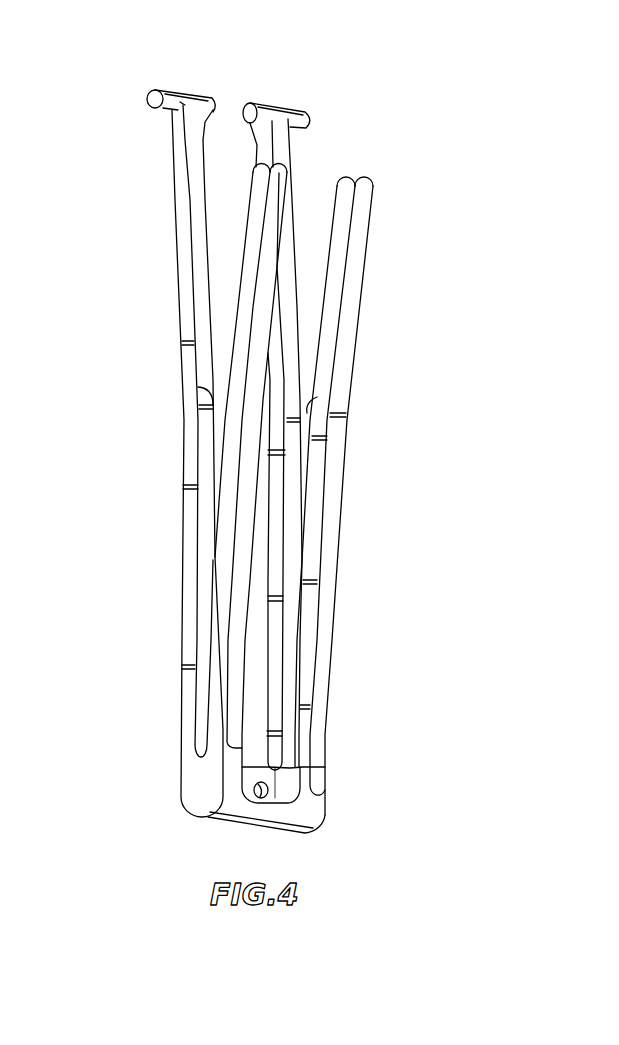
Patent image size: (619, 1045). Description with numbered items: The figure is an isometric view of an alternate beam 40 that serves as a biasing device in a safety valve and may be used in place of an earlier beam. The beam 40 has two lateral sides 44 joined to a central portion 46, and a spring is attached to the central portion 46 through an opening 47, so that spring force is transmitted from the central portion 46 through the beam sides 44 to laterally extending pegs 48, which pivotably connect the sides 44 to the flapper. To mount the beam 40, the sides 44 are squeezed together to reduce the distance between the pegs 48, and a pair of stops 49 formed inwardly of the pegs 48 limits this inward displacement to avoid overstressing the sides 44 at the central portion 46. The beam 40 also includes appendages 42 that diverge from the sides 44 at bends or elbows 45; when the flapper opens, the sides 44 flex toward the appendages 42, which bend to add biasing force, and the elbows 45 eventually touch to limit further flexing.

The beam 40 is at (508, 160).
The appendages 42 is at (238, 290).
The lateral sides 44 is at (175, 252).
The bends or elbows 45 is at (200, 392).
The central portion 46 is at (210, 817).
The opening 47 is at (268, 795).
The pegs 48 is at (165, 92).
The stops 49 is at (218, 108).